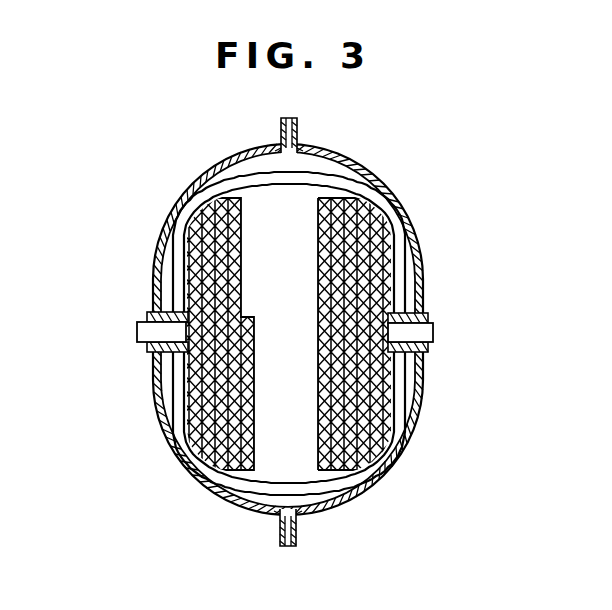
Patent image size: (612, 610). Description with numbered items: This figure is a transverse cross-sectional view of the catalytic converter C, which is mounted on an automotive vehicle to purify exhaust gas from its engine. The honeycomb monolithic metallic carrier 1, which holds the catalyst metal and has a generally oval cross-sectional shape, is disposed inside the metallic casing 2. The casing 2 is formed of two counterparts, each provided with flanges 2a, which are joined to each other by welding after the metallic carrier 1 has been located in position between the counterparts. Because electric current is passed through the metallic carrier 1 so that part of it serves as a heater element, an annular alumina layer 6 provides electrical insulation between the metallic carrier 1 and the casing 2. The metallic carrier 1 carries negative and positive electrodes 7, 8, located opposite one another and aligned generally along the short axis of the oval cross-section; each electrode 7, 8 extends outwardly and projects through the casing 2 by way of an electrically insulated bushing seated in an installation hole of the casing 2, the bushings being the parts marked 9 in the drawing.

The catalytic converter C is at (288, 324).
The honeycomb monolithic metallic carrier 1 is at (368, 226).
The metallic casing 2 is at (421, 406).
The flanges 2a is at (281, 125).
The annular alumina layer 6 is at (378, 428).
The negative electrode 7 is at (430, 318).
The positive electrode 8 is at (147, 328).
The pipe flange 9 is at (148, 313).